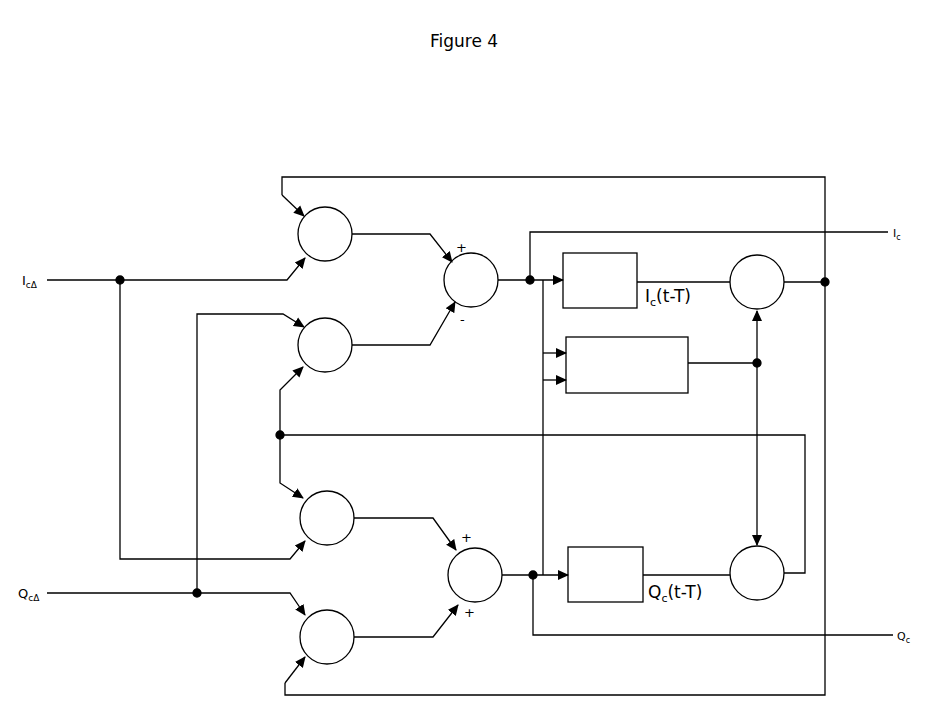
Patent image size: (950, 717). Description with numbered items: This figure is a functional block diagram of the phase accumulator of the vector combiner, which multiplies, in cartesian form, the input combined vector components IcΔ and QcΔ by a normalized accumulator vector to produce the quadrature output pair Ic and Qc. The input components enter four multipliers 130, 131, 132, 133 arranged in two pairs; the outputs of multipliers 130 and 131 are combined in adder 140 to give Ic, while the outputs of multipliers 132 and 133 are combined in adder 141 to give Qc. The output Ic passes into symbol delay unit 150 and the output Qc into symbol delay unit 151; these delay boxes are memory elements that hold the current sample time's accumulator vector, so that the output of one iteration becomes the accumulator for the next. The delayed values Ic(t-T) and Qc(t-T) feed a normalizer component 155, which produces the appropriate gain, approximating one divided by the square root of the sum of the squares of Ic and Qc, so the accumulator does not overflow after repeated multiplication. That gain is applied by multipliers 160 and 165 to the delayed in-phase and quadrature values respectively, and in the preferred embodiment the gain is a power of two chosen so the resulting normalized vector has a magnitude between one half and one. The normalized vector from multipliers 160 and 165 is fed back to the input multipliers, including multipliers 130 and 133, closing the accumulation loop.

The multiplier 130 is at (298, 233).
The multiplier 131 is at (337, 372).
The multiplier 132 is at (348, 497).
The multiplier 133 is at (345, 657).
The adder 140 is at (490, 303).
The adder 141 is at (483, 548).
The symbol delay unit 150 is at (637, 257).
The symbol delay unit 151 is at (605, 547).
The normalizer component 155 is at (598, 395).
The multiplier 160 is at (775, 302).
The multiplier 165 is at (778, 594).